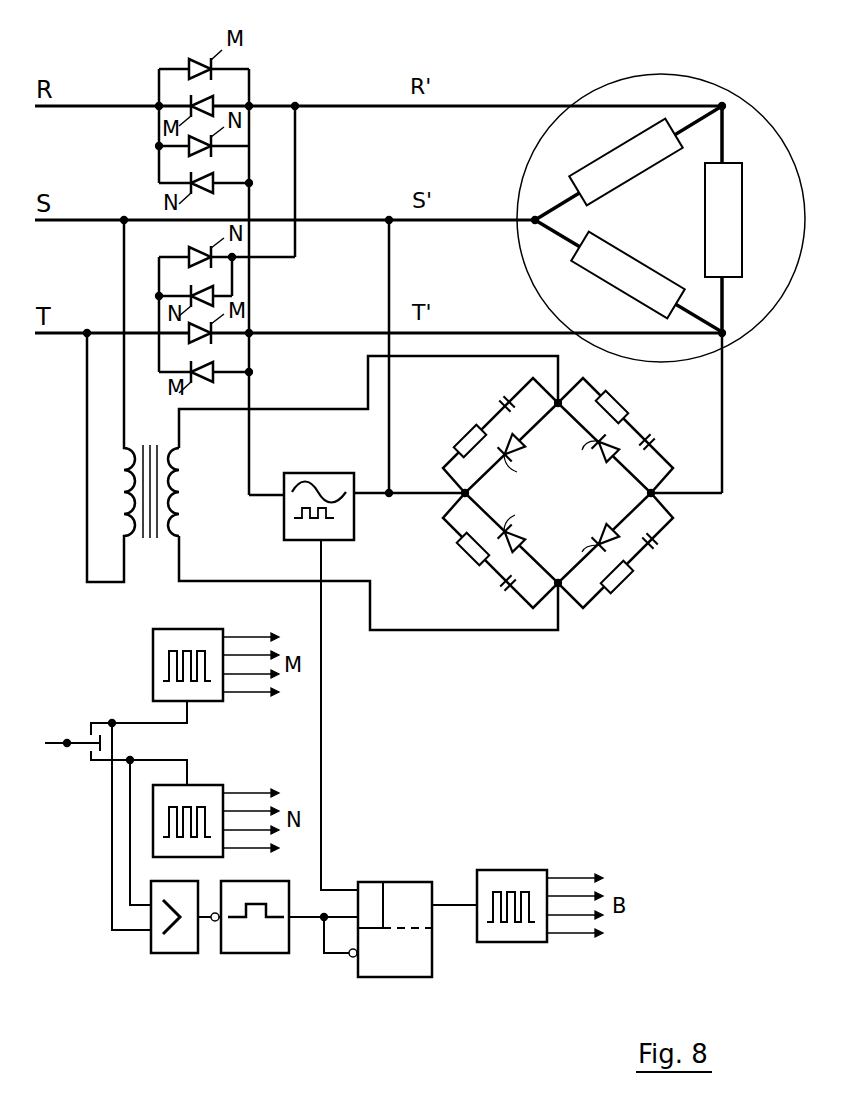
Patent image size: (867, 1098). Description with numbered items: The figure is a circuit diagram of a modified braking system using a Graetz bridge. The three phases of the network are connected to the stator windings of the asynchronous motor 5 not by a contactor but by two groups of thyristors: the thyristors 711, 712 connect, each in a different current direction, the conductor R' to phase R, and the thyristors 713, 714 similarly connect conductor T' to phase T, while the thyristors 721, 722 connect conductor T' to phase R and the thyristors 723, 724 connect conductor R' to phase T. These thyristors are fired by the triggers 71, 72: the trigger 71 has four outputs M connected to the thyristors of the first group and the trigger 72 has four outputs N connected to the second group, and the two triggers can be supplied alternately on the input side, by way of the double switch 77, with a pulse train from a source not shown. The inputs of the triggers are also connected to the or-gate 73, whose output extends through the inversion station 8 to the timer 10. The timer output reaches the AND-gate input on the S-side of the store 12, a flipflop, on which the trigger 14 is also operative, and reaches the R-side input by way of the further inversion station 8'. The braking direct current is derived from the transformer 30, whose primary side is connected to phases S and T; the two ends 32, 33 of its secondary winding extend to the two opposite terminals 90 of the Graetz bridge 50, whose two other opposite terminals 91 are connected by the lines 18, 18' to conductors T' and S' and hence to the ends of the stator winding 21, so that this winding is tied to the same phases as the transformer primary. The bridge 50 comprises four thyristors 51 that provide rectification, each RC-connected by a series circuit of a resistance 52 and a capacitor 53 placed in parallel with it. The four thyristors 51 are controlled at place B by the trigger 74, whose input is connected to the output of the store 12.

The thyristor 711 is at (190, 71).
The thyristor 712 is at (213, 101).
The thyristor 721 is at (193, 151).
The thyristor 722 is at (215, 179).
The thyristor 723 is at (190, 251).
The thyristor 724 is at (220, 288).
The thyristor 713 is at (190, 346).
The thyristor 714 is at (217, 364).
The asynchronous motor 5 is at (661, 228).
The stator winding 21 is at (620, 296).
The line 18 is at (714, 412).
The line 18' is at (415, 356).
The transformer 30 is at (150, 538).
The end of secondary winding 32 is at (199, 411).
The end of secondary winding 33 is at (200, 579).
The trigger 14 is at (355, 514).
The Graetz bridge 50 is at (567, 499).
The thyristor 51 is at (590, 535).
The resistance 52 is at (470, 560).
The capacitor 53 is at (500, 590).
The terminal 90 is at (558, 493).
The terminal 91 is at (470, 493).
The trigger 71 is at (178, 629).
The trigger 72 is at (197, 785).
The double switch 77 is at (80, 738).
The or-gate 73 is at (162, 955).
The inversion station 8 is at (209, 952).
The timer 10 is at (268, 955).
The inversion station 8' is at (338, 954).
The store 12 is at (434, 938).
The trigger 74 is at (525, 943).